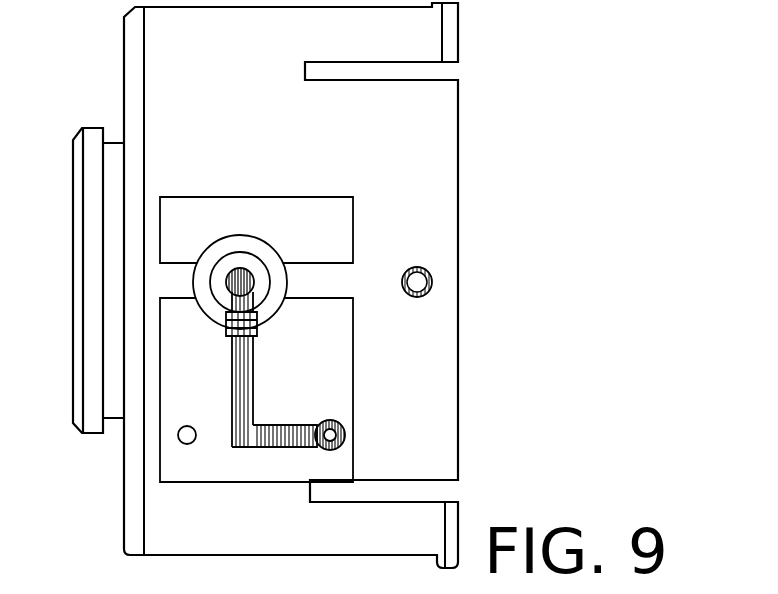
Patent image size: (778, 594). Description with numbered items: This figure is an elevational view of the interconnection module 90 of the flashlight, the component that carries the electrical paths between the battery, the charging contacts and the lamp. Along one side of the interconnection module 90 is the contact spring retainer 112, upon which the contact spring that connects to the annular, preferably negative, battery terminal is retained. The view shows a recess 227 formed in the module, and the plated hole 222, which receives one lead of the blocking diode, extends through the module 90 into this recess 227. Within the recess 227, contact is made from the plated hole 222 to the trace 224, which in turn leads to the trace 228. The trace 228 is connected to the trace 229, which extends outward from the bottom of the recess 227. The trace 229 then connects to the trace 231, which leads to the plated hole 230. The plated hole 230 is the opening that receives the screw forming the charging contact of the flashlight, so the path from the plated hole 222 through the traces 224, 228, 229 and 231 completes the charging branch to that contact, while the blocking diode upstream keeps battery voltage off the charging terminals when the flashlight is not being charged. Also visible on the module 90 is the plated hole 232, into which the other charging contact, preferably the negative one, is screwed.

The interconnection module 90 is at (504, 153).
The contact spring retainer 112 is at (80, 131).
The plated hole 222 is at (343, 423).
The trace 224 is at (255, 447).
The recess 227 is at (215, 399).
The trace 228 is at (253, 380).
The trace 229 is at (258, 329).
The plated hole 230 is at (240, 268).
The trace 231 is at (226, 315).
The plated hole 232 is at (432, 282).